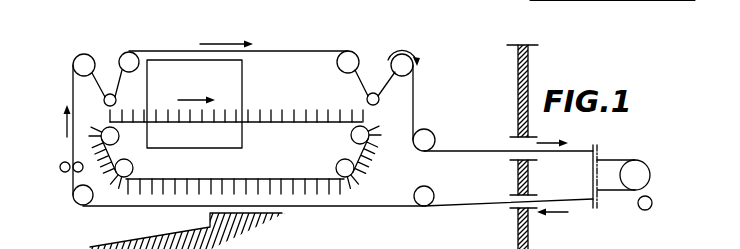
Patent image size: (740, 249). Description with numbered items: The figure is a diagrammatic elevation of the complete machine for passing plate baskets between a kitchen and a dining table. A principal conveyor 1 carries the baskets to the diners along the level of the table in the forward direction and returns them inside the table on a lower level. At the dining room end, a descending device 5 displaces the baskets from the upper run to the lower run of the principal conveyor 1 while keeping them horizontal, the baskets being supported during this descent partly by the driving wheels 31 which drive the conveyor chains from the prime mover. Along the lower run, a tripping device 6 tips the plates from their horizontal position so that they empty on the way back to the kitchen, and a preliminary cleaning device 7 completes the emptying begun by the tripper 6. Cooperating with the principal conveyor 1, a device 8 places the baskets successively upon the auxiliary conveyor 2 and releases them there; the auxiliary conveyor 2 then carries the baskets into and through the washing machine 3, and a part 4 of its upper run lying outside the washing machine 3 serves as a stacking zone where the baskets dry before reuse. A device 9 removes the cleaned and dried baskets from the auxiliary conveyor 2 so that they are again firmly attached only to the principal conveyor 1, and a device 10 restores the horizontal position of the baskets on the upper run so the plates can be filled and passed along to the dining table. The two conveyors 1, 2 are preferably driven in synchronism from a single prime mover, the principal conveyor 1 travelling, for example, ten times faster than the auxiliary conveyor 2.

The principal conveyor 1 is at (520, 144).
The auxiliary conveyor 2 is at (301, 127).
The washing machine 3 is at (194, 104).
The stacking zone 4 is at (238, 77).
The descending device 5 is at (636, 178).
The tripping device 6 is at (193, 229).
The preliminary cleaning device 7 is at (67, 180).
The placing device 8 is at (106, 79).
The removing device 9 is at (378, 77).
The horizontal position restoring device 10 is at (453, 158).
The driving wheels 31 is at (624, 190).